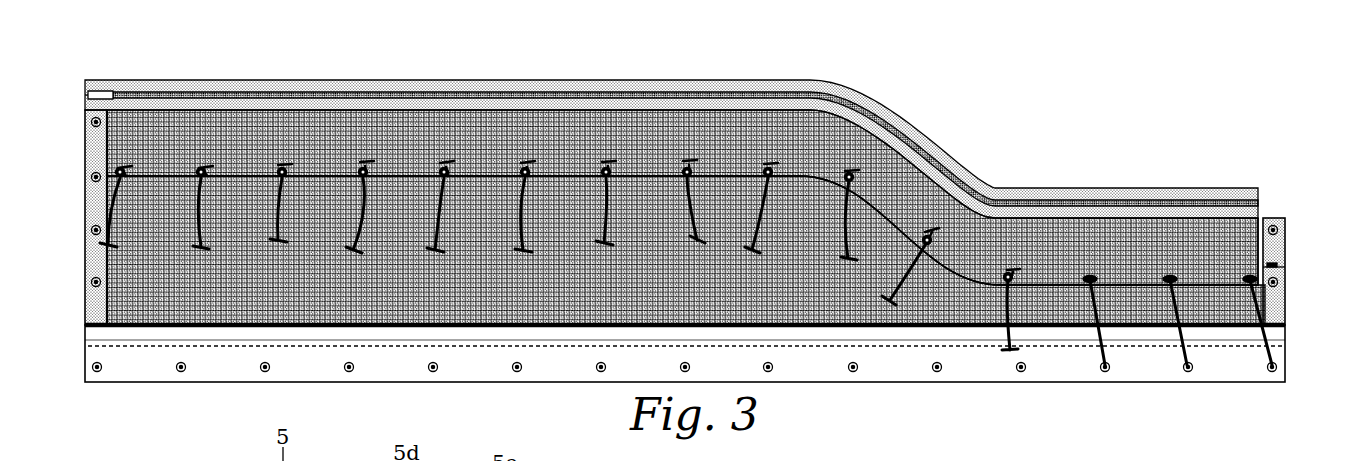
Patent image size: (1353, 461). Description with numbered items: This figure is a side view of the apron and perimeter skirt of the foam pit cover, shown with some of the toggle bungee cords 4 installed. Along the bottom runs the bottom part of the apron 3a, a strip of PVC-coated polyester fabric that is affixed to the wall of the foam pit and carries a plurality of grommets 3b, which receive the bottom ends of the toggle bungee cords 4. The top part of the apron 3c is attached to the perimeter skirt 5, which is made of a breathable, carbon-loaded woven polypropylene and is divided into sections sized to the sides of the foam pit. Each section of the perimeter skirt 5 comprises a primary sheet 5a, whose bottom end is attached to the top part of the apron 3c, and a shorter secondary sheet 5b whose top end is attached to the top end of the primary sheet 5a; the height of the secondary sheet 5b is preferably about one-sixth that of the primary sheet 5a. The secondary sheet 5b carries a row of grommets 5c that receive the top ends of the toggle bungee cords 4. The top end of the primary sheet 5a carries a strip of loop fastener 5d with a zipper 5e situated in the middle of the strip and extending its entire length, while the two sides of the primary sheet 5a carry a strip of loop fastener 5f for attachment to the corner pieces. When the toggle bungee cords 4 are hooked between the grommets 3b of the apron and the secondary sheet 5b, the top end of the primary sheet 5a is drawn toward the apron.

The bottom part of the apron 3a is at (311, 375).
The grommets 3b is at (91, 177).
The top part of the apron 3c is at (140, 335).
The toggle bungee cords 4 is at (117, 214).
The perimeter skirt 5 is at (671, 114).
The primary sheet 5a is at (418, 151).
The secondary sheet 5b is at (393, 283).
The grommets 5c is at (199, 168).
The strip of loop fastener 5d is at (375, 107).
The zipper 5e is at (433, 92).
The strip of loop fastener 5f is at (96, 201).